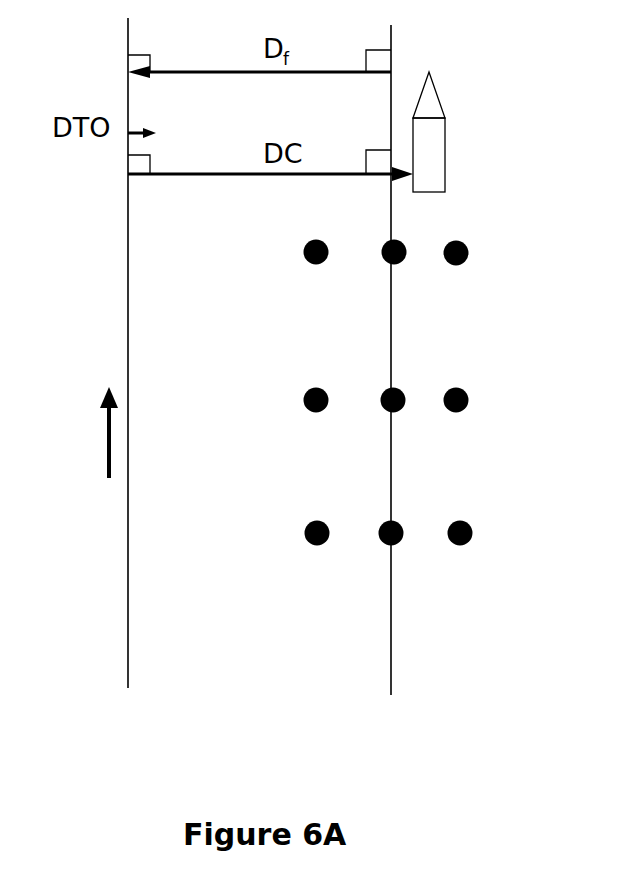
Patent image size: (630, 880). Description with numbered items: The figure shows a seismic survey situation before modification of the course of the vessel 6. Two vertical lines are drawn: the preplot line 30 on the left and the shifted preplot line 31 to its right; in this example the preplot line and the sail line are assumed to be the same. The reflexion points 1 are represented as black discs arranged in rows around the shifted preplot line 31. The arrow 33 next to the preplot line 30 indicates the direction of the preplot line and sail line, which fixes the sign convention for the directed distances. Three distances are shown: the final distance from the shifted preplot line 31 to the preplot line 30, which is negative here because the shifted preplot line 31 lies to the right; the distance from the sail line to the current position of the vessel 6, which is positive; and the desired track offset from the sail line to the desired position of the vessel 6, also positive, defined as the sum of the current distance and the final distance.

The reflexion points 1 is at (473, 272).
The vessel 6 is at (450, 148).
The preplot line 30 is at (128, 672).
The shifted preplot line 31 is at (388, 672).
The arrow 33 is at (100, 440).